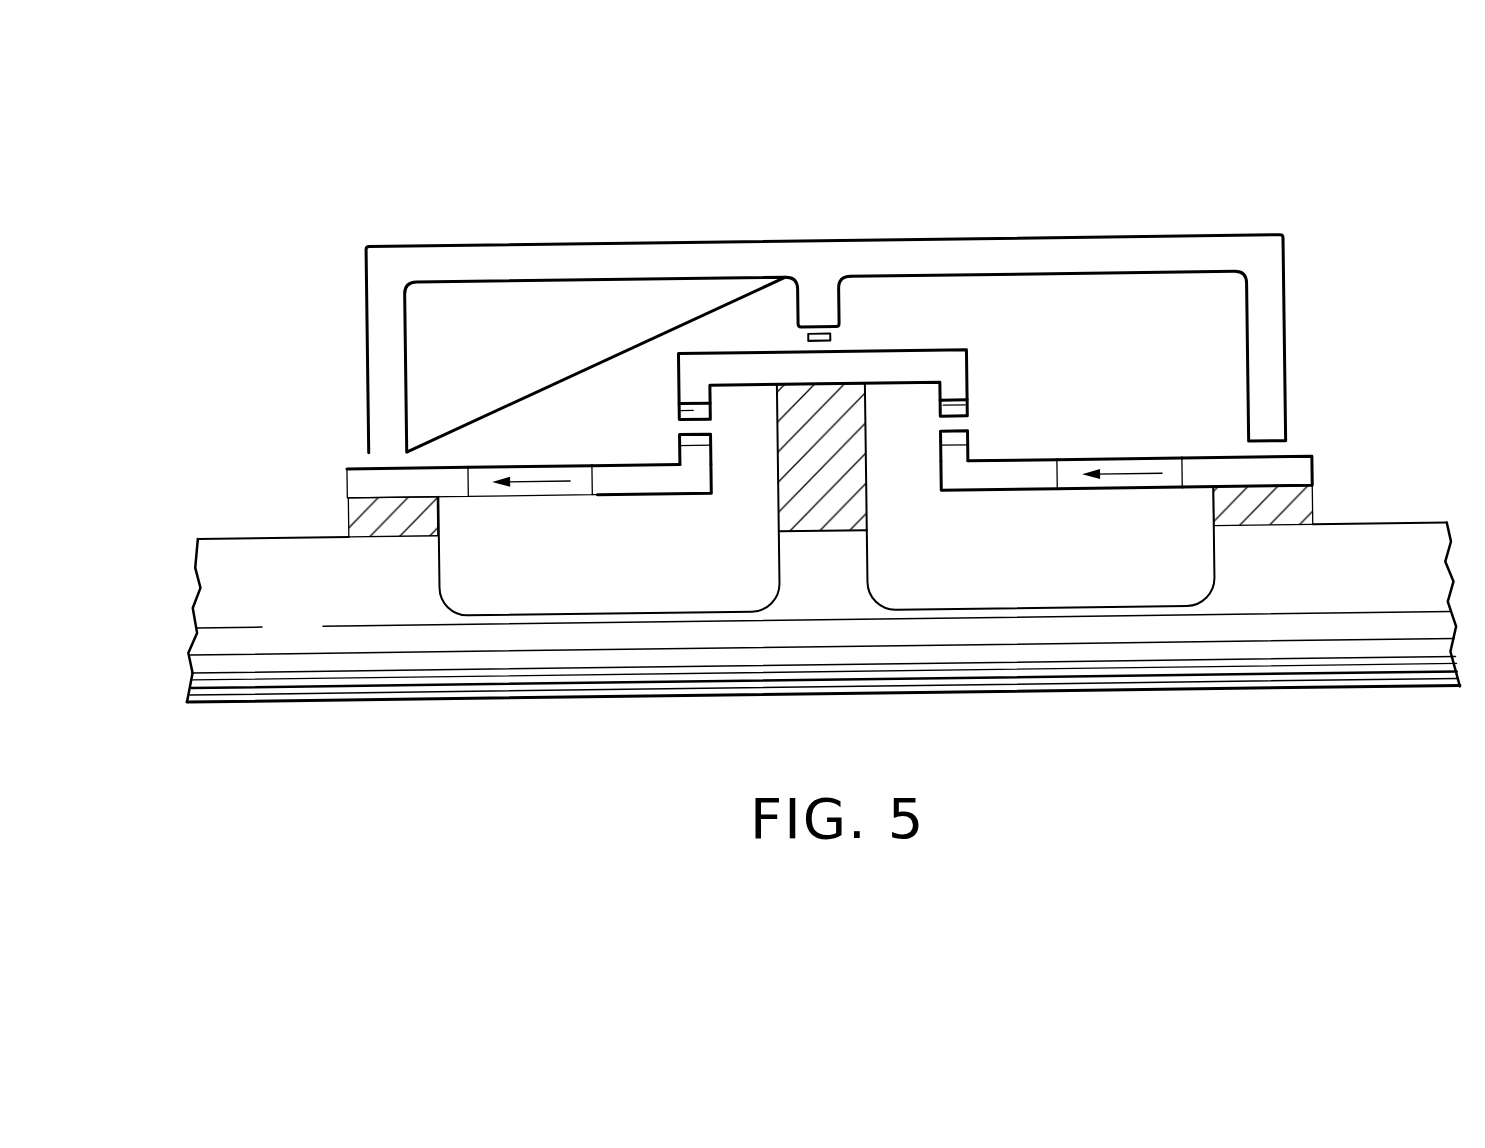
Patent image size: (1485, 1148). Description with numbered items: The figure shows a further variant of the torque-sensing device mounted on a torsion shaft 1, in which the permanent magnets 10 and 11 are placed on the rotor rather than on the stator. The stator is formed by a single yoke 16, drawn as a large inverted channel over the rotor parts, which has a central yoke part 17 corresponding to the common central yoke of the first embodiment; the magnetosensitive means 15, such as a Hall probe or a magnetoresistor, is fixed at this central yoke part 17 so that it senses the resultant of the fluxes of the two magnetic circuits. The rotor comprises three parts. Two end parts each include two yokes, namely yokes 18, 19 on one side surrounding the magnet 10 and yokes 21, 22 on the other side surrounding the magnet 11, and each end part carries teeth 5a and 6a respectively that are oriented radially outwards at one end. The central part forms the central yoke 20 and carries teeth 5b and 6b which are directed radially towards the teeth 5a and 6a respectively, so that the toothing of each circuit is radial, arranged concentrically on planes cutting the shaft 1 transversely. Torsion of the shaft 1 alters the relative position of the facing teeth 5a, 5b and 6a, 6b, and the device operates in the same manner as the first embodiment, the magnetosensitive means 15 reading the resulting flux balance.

The torsion shaft 1 is at (305, 620).
The teeth 5a is at (680, 441).
The teeth 5b is at (681, 408).
The teeth 6a is at (970, 445).
The teeth 6b is at (971, 410).
The permanent magnet 10 is at (535, 484).
The permanent magnet 11 is at (1130, 488).
The magnetosensitive means 15 is at (810, 337).
The single yoke 16 is at (683, 260).
The central yoke part 17 is at (825, 300).
The yoke 18 is at (430, 473).
The yoke 19 is at (640, 483).
The central yoke 20 is at (911, 369).
The yoke 21 is at (982, 489).
The yoke 22 is at (1290, 484).